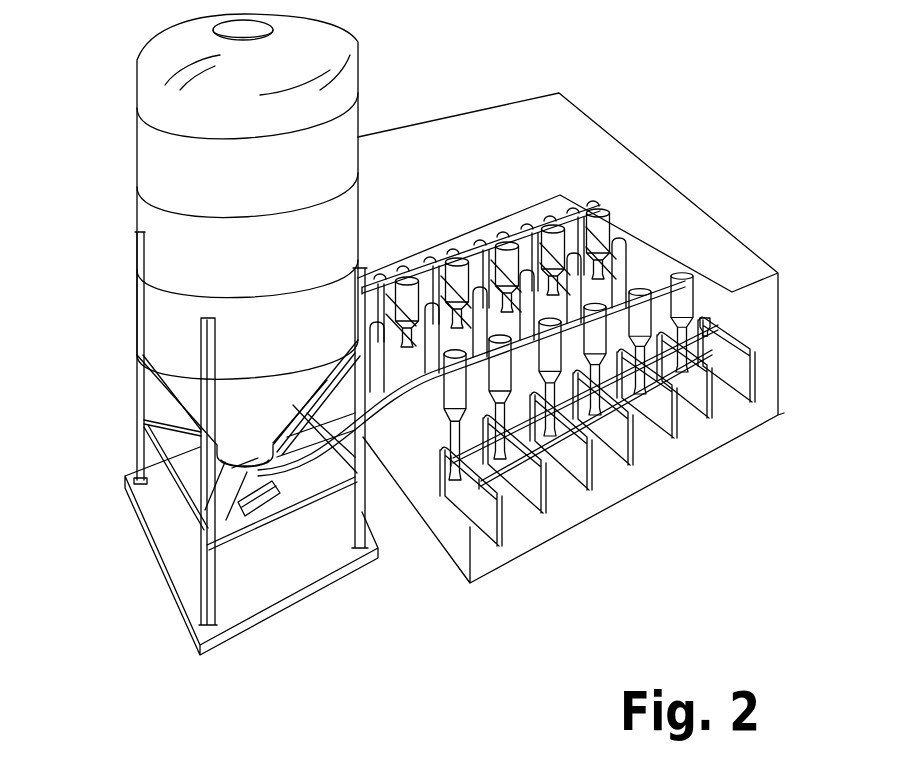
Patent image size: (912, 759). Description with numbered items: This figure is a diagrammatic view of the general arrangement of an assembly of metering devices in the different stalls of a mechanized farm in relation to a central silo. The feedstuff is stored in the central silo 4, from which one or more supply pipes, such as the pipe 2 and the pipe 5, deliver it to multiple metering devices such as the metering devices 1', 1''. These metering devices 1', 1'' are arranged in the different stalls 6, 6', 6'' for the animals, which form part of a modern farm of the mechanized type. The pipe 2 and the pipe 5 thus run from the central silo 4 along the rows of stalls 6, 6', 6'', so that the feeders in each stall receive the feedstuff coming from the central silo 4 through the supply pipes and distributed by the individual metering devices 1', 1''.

The central silo 4 is at (152, 175).
The supply pipe 5 is at (562, 218).
The supply pipe 2 is at (665, 265).
The metering device 1' is at (759, 322).
The metering device 1'' is at (777, 338).
The stall 6 is at (743, 401).
The stall 6' is at (708, 424).
The stall 6'' is at (672, 455).